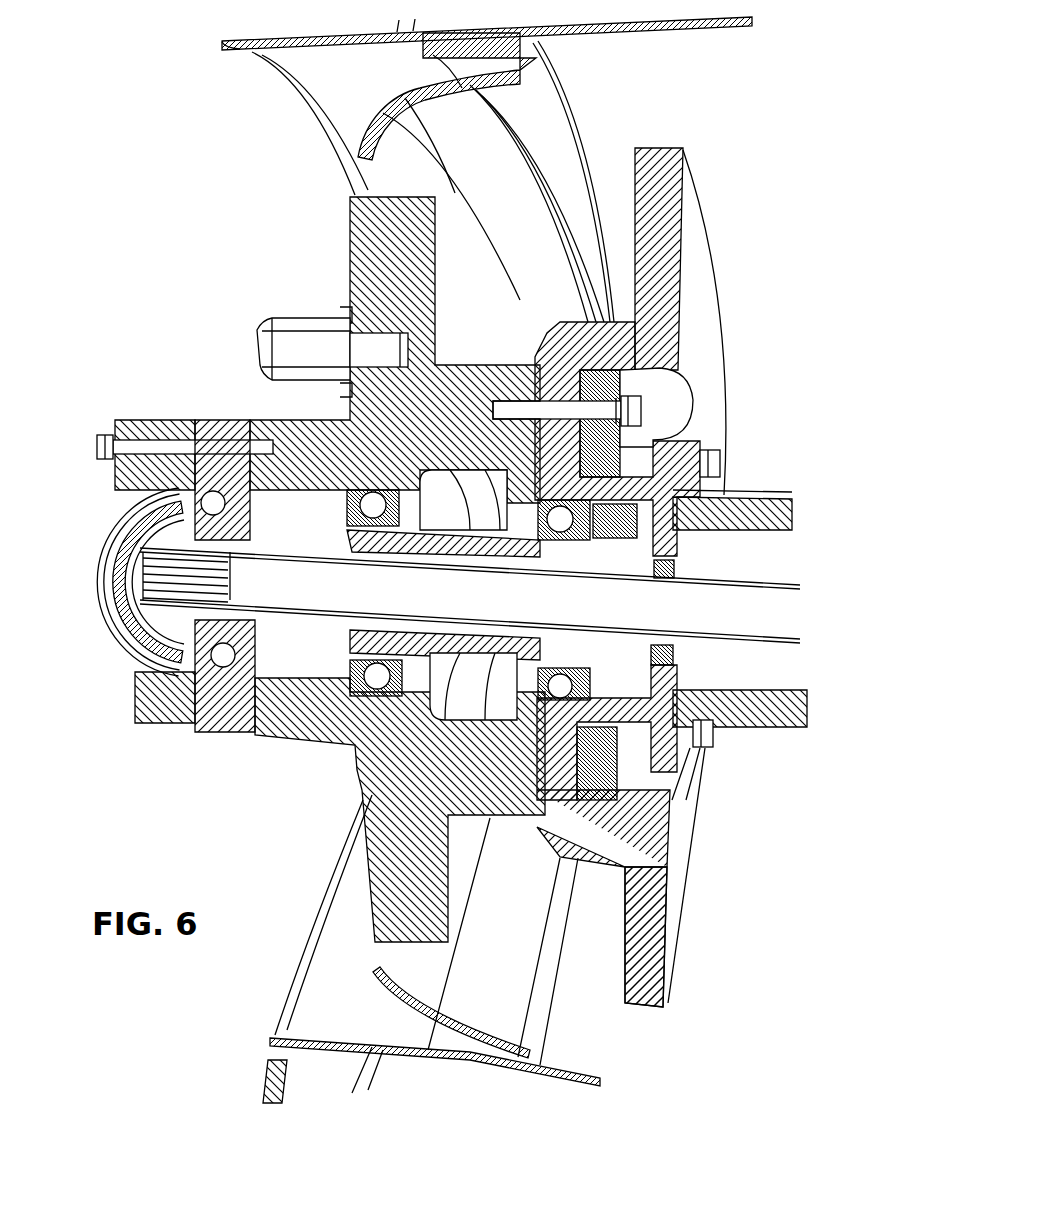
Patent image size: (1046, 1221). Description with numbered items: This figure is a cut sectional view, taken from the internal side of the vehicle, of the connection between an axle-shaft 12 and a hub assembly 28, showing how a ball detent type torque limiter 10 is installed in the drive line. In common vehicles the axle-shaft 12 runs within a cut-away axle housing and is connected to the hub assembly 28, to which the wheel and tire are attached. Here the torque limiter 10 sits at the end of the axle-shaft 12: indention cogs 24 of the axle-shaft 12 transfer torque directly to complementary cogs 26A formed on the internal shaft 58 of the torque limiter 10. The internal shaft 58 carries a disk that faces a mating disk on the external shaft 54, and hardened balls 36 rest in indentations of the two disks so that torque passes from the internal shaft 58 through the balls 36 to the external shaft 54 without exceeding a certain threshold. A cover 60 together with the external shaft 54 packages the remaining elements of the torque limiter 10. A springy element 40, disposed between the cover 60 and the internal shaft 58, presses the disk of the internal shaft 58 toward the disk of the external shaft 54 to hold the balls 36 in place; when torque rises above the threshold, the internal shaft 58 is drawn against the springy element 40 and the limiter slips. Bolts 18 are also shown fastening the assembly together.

The torque limiter 10 is at (123, 368).
The axle-shaft 12 is at (733, 617).
The bolt 18 is at (96, 446).
The indention cogs 24 is at (145, 593).
The complementary cogs 26A is at (187, 668).
The hub assembly 28 is at (300, 430).
The hardened balls 36 is at (222, 667).
The springy element 40 is at (115, 562).
The external shaft 54 is at (240, 705).
The internal shaft 58 is at (186, 540).
The cover 60 is at (137, 697).